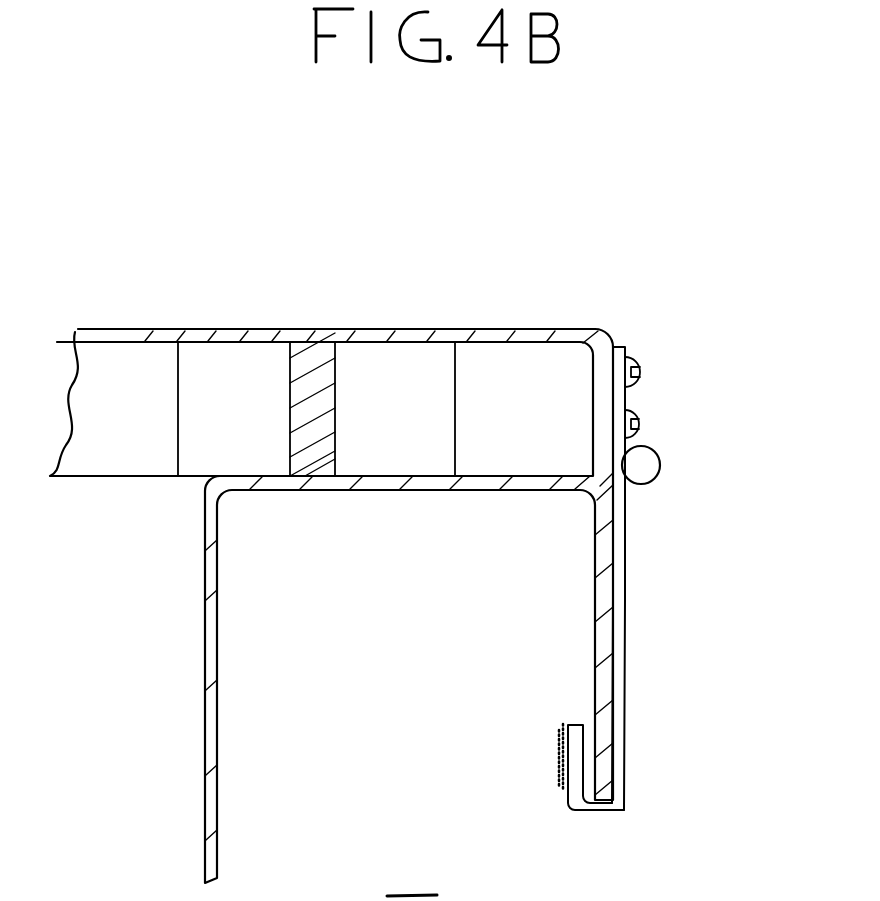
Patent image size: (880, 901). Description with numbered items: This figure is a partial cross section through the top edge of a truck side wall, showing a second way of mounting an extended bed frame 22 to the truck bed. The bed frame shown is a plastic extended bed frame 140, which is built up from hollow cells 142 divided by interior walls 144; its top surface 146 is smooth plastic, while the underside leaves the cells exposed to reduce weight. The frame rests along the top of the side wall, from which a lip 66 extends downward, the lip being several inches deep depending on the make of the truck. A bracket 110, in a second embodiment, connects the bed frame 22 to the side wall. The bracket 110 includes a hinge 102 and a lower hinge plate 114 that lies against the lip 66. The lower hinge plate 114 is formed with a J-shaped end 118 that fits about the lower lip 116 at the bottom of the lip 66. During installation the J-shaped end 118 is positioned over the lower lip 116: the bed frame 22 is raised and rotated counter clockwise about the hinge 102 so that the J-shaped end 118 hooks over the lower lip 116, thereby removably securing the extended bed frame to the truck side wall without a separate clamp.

The plastic extended bed frame 140 is at (264, 282).
The hollow cells 142 is at (127, 428).
The interior walls 144 is at (520, 362).
The extended bed frame 22 is at (332, 327).
The top surface 146 is at (190, 328).
The lip 66 is at (593, 587).
The bracket 110 is at (667, 370).
The hinge 102 is at (660, 453).
The lower hinge plate 114 is at (650, 778).
The lower lip 116 is at (590, 712).
The J-shaped end 118 is at (567, 802).